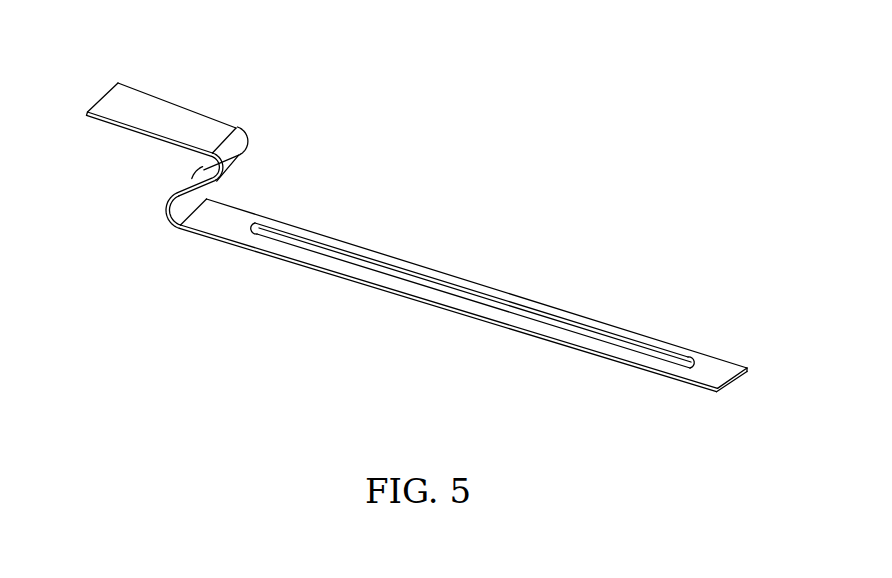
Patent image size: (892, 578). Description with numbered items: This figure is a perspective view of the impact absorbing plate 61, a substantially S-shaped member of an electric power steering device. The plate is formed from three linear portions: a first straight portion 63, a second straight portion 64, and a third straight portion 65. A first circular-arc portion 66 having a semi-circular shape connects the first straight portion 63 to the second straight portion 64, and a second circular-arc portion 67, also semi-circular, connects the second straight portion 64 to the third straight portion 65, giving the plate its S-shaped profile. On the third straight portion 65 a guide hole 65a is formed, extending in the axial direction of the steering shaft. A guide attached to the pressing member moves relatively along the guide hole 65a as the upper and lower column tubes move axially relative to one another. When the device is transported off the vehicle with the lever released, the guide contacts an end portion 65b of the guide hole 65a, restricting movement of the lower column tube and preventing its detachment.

The impact absorbing plate 61 is at (346, 108).
The first straight portion 63 is at (148, 108).
The second straight portion 64 is at (214, 151).
The third straight portion 65 is at (415, 263).
The guide hole 65a is at (553, 323).
The end portion of the guide hole 65b is at (687, 357).
The first circular-arc portion 66 is at (248, 150).
The second circular-arc portion 67 is at (183, 196).